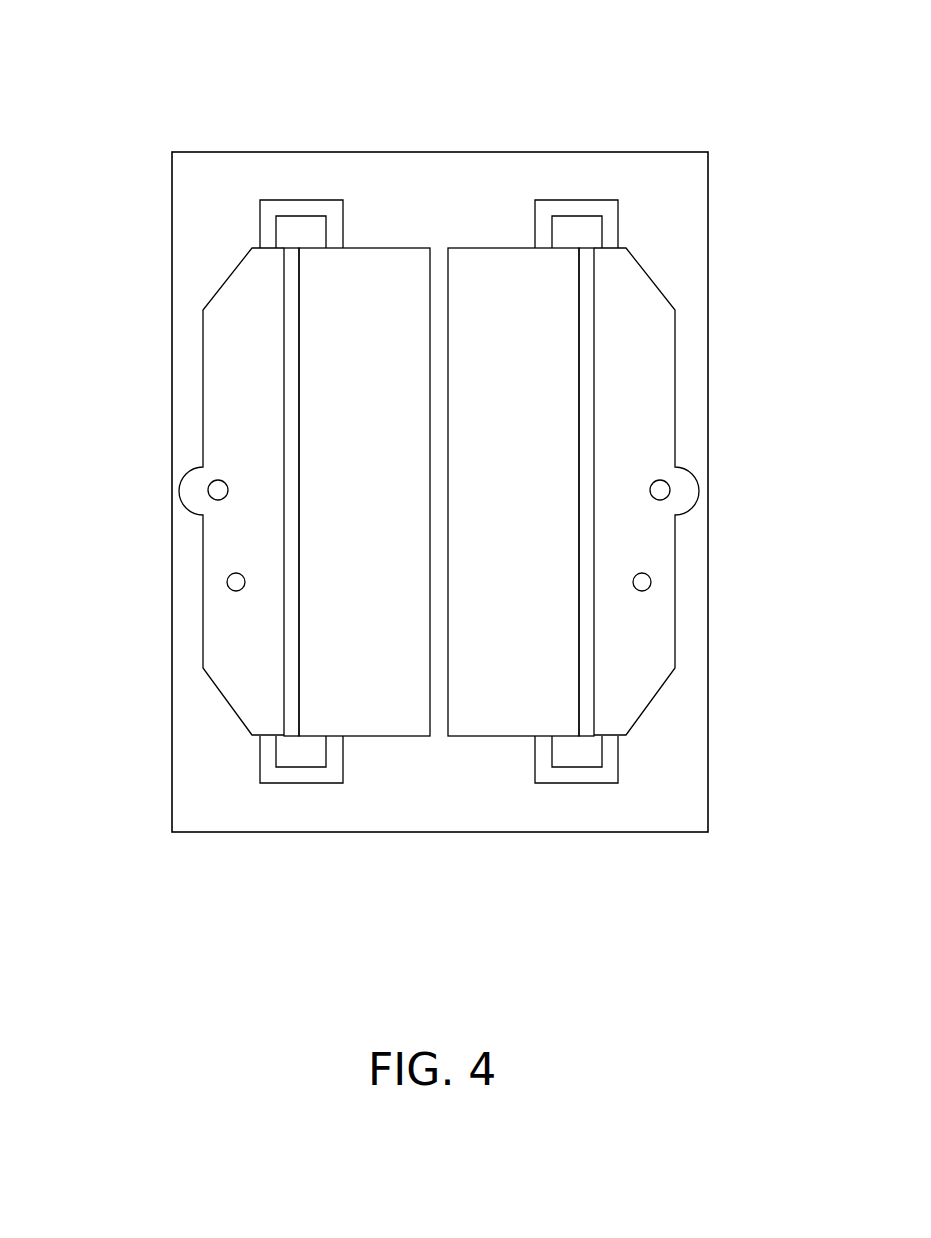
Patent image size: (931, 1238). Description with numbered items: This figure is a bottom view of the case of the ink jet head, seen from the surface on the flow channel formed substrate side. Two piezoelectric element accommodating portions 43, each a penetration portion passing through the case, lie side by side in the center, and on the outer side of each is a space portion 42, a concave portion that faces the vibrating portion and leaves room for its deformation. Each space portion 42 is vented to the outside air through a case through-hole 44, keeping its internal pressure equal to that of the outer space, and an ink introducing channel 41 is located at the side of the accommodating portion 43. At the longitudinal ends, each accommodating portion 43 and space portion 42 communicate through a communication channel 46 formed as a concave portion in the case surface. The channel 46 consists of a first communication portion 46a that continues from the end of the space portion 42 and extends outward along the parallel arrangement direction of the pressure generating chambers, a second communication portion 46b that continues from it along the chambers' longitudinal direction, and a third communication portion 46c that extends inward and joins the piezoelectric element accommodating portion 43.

The ink introducing channel 41 is at (218, 490).
The space portion 42 is at (250, 427).
The piezoelectric element accommodating portion 43 is at (353, 347).
The case through-hole 44 is at (236, 582).
The communication channel 46 is at (440, 493).
The first communication portion 46a is at (262, 224).
The second communication portion 46b is at (301, 212).
The third communication portion 46c is at (338, 224).